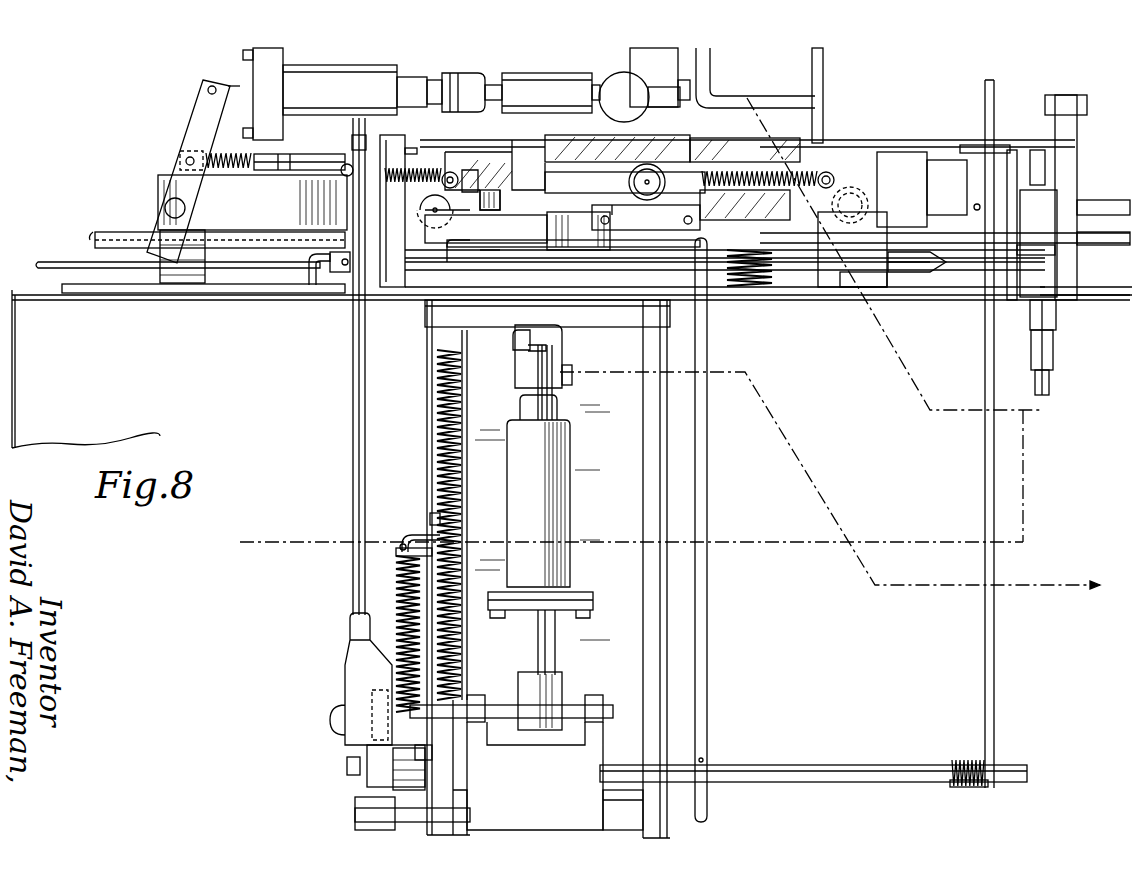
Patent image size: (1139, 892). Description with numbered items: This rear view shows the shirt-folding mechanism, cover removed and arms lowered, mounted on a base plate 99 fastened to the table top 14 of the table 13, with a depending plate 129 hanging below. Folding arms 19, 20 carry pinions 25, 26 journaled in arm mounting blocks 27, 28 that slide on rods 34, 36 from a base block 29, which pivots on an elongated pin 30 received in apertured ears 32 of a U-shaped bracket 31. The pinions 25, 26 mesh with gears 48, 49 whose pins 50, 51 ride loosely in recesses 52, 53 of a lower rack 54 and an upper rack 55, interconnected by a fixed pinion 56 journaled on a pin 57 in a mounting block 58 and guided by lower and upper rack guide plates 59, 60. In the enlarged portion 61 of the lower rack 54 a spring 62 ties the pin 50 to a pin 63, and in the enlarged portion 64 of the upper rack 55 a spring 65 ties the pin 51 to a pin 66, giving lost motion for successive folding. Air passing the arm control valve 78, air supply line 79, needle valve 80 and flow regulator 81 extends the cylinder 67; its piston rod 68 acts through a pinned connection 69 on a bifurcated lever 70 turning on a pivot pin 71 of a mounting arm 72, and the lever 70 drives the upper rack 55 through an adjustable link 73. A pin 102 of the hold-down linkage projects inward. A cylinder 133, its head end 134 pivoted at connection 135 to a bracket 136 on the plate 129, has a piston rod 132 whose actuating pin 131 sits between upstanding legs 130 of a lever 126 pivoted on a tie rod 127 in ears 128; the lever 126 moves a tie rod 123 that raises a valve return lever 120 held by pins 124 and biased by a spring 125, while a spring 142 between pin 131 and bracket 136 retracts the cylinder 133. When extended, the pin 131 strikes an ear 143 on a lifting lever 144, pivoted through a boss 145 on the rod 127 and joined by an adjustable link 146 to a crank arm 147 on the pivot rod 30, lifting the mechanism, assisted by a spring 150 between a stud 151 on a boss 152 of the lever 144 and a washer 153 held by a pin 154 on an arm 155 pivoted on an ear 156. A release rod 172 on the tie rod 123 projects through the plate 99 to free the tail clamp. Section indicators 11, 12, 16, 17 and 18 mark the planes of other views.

The section line 11- 11 is at (846, 160).
The section line 12- 12 is at (513, 812).
The table 13 is at (58, 334).
The table top 14 is at (57, 262).
The section line 16- 16 is at (650, 300).
The section line 17-17 / post 17 is at (790, 48).
The housing block 18 is at (676, 62).
The folding arm 19 is at (1086, 285).
The folding arm 20 is at (191, 236).
The small pinion 25 is at (860, 280).
The small pinion 26 is at (418, 292).
The arm mounting block 27 is at (904, 276).
The arm mounting block 28 is at (493, 252).
The base block 29 is at (532, 237).
The elongated pin 30 is at (311, 285).
The U-shaped bracket 31 is at (740, 290).
The apertured upstanding ears 32 is at (455, 268).
The slide rod 34 is at (1105, 246).
The slide rod 36 is at (96, 233).
The gear 48 is at (928, 189).
The gear 49 is at (458, 210).
The pin 50 is at (829, 166).
The pin 51 is at (454, 170).
The recess 52 is at (852, 249).
The recess 53 is at (474, 193).
The lower rack 54 is at (745, 216).
The upper rack 55 is at (514, 160).
The fixed pinion 56 is at (646, 218).
The pin 57 is at (661, 182).
The mounting block 58 is at (625, 187).
The lower rack guide plate 59 is at (614, 214).
The upper rack guide plate 60 is at (593, 140).
The vertically enlarged portion 61 is at (852, 186).
The spring 62 is at (759, 207).
The pin 63 is at (745, 150).
The enlarged portion 64 is at (493, 188).
The spring 65 is at (418, 173).
The pin 66 is at (346, 180).
The cylinder 67 is at (385, 66).
The piston rod 68 is at (233, 85).
The pinned connection 69 is at (207, 91).
The bifurcated lever 70 is at (195, 130).
The pivot pin 71 is at (166, 206).
The mounting arm 72 is at (257, 214).
The adjustable link 73 is at (286, 155).
The arm control valve 78 is at (1090, 161).
The air supply line 79 is at (1050, 386).
The needle valve 80 is at (622, 72).
The flow regulator 81 is at (535, 72).
The base plate 99 is at (208, 291).
The laterally projecting pin 102 is at (965, 146).
The valve return lever 120 is at (996, 660).
The tie rod 123 is at (838, 760).
The pins 124 is at (952, 763).
The spring 125 is at (968, 786).
The lever 126 is at (588, 758).
The tie rod 127 is at (603, 808).
The mounting and pivot ears 128 is at (447, 768).
The depending plate 129 is at (624, 532).
The upstanding legs 130 is at (474, 694).
The actuating pin 131 is at (498, 705).
The piston rod 132 is at (548, 633).
The cylinder 133 is at (556, 470).
The head end 134 is at (560, 376).
The pivotal connection 135 is at (525, 340).
The bracket 136 is at (585, 324).
The spring 142 is at (438, 391).
The ear 143 is at (383, 700).
The pattern blade and mechanism lifting lever 144 is at (366, 753).
The boss 145 is at (372, 816).
The adjustable link 146 is at (353, 413).
The crank arm 147 is at (368, 143).
The spring 150 is at (397, 600).
The stud 151 is at (420, 752).
The boss 152 is at (378, 770).
The washer 153 is at (400, 553).
The pin 154 is at (404, 548).
The arm 155 is at (404, 537).
The ear 156 is at (432, 518).
The release rod 172 is at (709, 479).